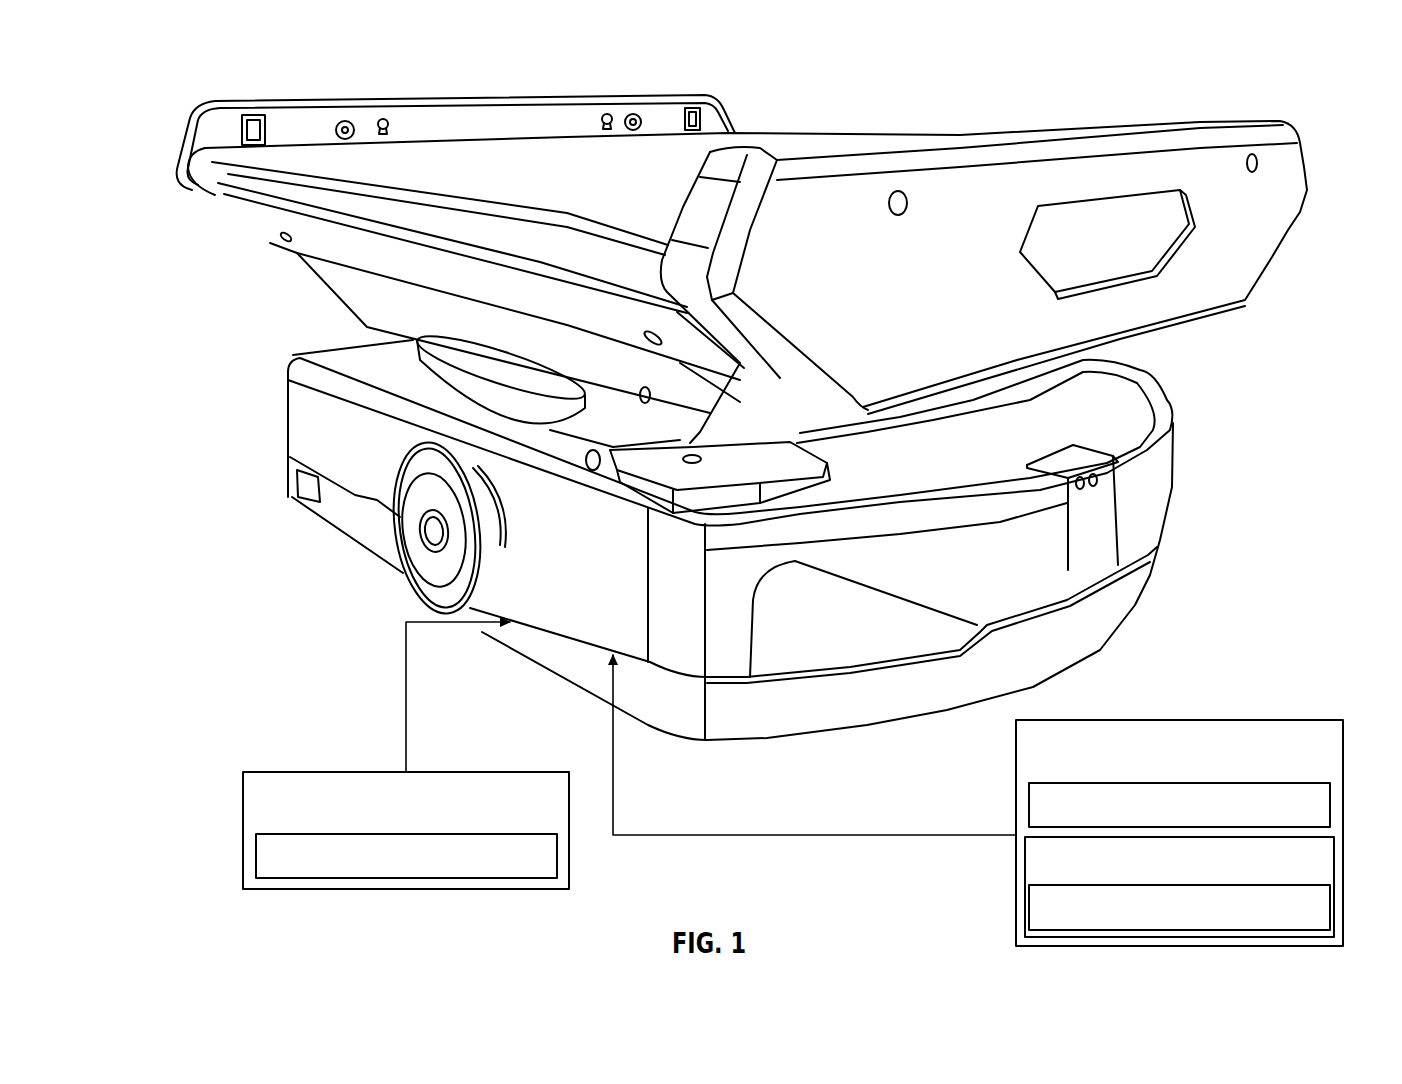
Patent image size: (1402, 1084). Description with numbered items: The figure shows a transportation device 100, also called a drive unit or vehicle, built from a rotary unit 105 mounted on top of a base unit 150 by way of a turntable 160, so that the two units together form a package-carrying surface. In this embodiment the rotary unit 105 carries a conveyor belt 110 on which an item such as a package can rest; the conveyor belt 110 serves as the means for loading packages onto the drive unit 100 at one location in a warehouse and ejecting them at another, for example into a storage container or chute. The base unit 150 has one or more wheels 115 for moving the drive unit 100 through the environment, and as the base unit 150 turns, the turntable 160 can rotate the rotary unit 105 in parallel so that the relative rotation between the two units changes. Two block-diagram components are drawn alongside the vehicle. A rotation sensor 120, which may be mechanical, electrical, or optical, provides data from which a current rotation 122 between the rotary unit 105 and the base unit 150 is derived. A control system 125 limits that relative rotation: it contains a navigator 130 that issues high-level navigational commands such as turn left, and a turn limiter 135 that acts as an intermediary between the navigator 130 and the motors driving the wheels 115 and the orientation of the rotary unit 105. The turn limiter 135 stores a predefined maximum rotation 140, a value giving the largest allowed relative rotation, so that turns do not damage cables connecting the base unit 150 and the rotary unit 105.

The transportation device 100 is at (992, 96).
The rotary unit 105 is at (281, 241).
The conveyor belt 110 is at (792, 99).
The wheel 115 is at (424, 591).
The rotation sensor 120 is at (308, 770).
The current rotation 122 is at (264, 832).
The control system 125 is at (1276, 719).
The navigator 130 is at (1320, 781).
The turn limiter 135 is at (1320, 835).
The maximum rotation 140 is at (1320, 884).
The base unit 150 is at (1140, 602).
The turntable 160 is at (457, 391).